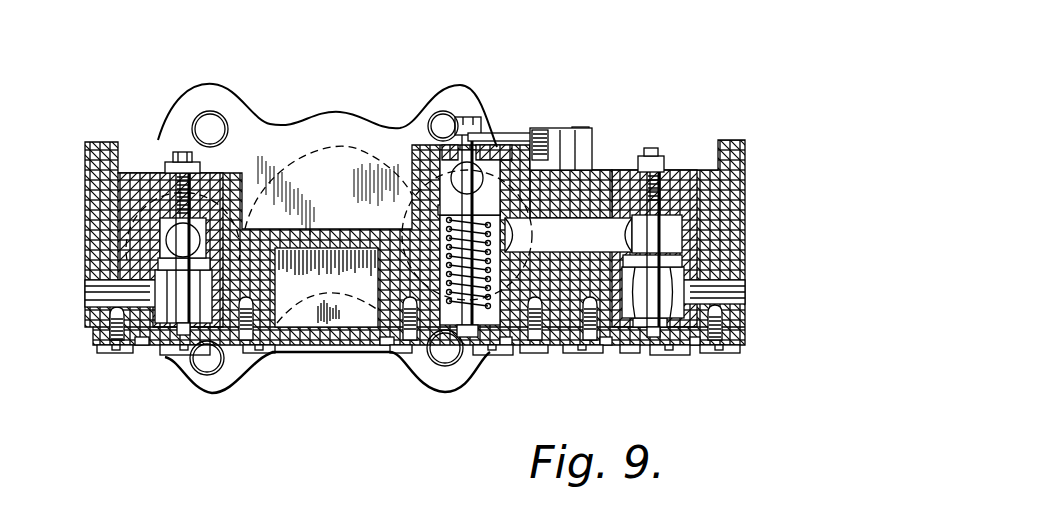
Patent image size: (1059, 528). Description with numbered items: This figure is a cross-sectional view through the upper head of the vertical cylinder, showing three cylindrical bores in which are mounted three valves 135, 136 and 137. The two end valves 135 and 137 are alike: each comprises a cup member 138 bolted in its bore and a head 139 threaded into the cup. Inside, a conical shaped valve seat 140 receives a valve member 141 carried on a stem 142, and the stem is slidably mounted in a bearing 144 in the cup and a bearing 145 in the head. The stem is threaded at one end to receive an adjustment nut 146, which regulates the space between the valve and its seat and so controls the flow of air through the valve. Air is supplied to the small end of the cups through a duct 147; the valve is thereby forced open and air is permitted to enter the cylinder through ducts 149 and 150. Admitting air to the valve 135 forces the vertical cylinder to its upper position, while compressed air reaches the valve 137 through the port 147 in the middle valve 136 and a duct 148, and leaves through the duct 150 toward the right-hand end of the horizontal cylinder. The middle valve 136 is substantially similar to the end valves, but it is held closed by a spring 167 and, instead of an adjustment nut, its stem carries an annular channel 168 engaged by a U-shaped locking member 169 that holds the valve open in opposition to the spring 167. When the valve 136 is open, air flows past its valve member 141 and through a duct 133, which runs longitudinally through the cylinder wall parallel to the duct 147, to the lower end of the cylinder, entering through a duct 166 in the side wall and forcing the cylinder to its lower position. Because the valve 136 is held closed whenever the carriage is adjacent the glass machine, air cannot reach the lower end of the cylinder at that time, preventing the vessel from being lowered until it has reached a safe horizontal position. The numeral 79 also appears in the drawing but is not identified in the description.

The valve 135 is at (145, 173).
The valve 136 is at (500, 357).
The valve 137 is at (623, 167).
The cup member 138 is at (213, 180).
The head 139 is at (158, 357).
The conical shaped valve seat 140 is at (157, 265).
The valve member 141 is at (233, 277).
The stem 142 is at (182, 297).
The bearing 144 is at (170, 203).
The bearing 145 is at (187, 357).
The adjustment nut 146 is at (195, 163).
The duct 147 is at (165, 233).
The duct 148 is at (568, 236).
The duct 149 is at (150, 298).
The duct 150 is at (717, 277).
The duct 133 is at (507, 190).
The duct 166 is at (410, 187).
The spring 167 is at (383, 352).
The annular channel 168 is at (443, 120).
The locking member 169 is at (567, 130).
The rotary member 79 is at (318, 345).